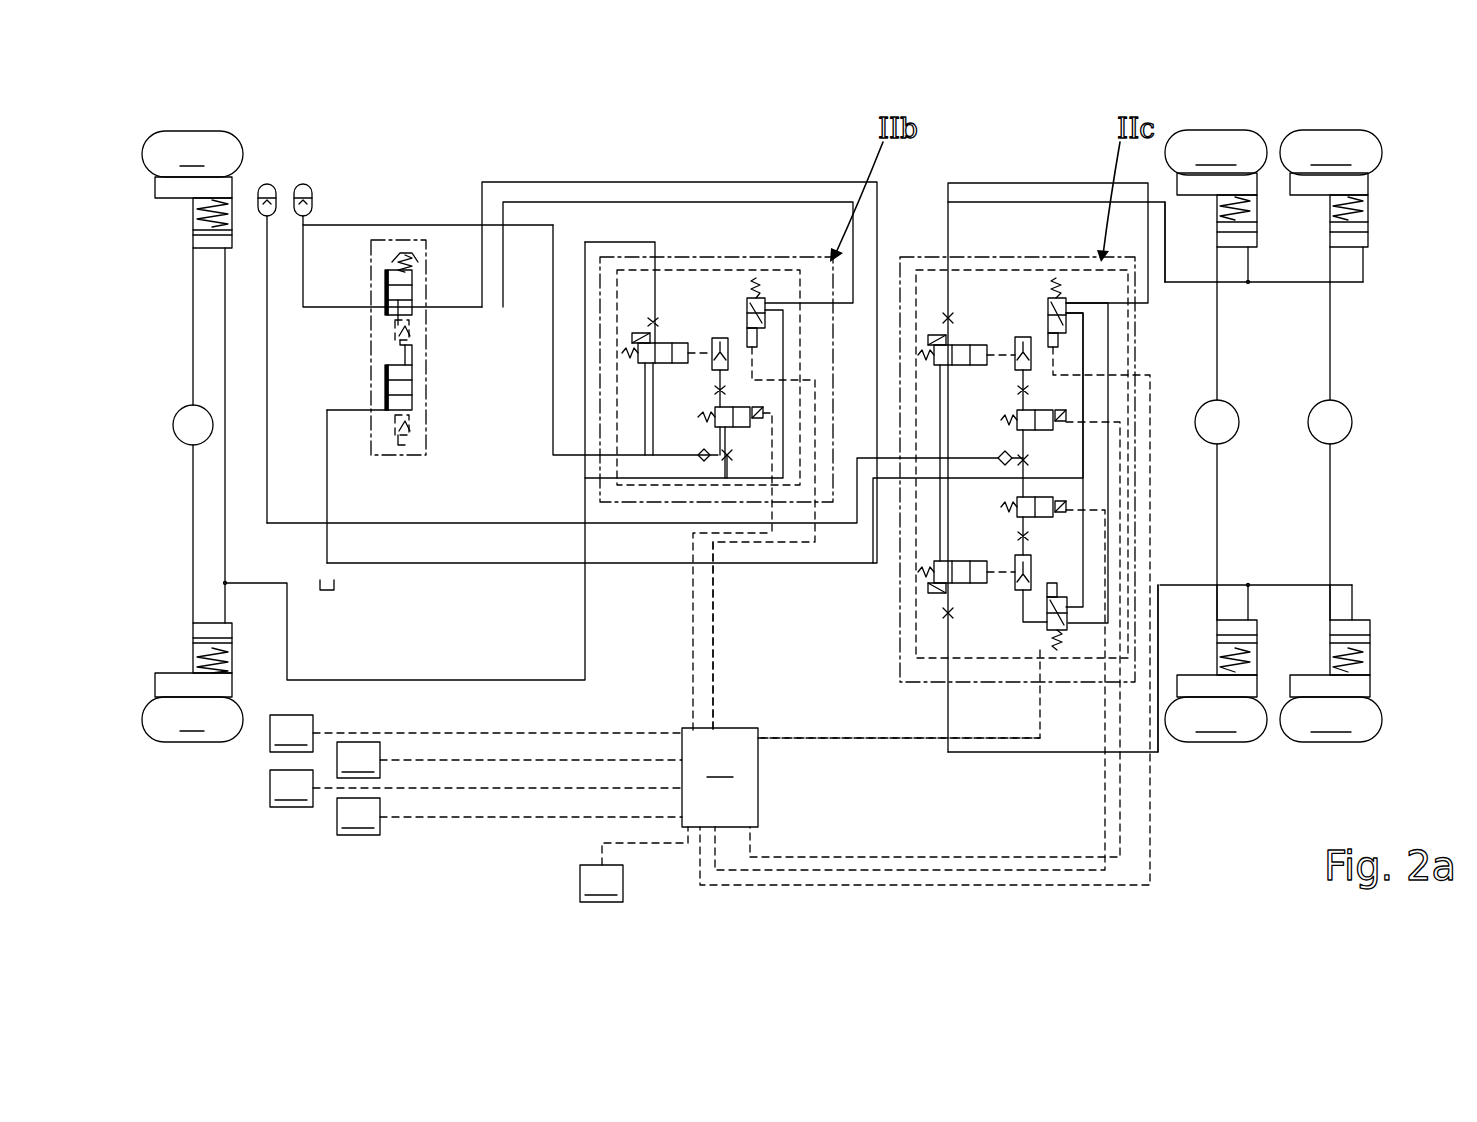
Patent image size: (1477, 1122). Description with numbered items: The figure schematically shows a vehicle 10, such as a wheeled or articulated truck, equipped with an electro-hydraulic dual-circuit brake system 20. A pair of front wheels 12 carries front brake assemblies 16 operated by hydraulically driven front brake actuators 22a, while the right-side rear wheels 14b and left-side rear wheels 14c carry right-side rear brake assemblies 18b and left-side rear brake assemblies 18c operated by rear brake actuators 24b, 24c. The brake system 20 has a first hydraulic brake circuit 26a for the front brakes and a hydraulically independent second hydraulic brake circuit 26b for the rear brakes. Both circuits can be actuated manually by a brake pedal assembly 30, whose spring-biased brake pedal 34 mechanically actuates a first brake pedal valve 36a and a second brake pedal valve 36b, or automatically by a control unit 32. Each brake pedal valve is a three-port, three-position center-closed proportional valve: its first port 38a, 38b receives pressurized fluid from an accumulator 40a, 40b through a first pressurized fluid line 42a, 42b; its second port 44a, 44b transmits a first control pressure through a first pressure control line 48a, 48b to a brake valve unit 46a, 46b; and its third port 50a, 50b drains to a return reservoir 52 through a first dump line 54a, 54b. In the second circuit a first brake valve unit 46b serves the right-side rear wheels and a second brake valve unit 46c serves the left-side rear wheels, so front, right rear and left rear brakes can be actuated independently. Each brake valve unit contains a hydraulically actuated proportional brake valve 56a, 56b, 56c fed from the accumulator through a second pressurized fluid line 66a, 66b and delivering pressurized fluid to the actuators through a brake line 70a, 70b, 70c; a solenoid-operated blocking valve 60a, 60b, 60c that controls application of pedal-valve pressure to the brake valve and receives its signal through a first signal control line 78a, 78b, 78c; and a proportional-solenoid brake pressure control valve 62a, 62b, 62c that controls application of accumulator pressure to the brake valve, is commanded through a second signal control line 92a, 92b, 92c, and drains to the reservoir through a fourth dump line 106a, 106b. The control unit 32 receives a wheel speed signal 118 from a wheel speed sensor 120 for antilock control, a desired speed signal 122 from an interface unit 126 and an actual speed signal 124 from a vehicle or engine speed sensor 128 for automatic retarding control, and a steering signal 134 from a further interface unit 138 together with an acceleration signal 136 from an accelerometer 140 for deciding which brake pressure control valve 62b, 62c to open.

The vehicle 10 is at (262, 118).
The front wheel 12 is at (192, 436).
The right side rear wheel 14b is at (1273, 152).
The left side rear wheel 14c is at (1273, 719).
The front brake assembly 16 is at (170, 183).
The right side rear brake assembly 18b is at (1250, 183).
The left side rear brake assembly 18c is at (1250, 682).
The brake system 20 is at (412, 140).
The front brake actuator 22a is at (200, 238).
The rear brake actuator 24b is at (1250, 241).
The rear brake actuator 24c is at (1335, 630).
The first hydraulic brake circuit 26a is at (729, 157).
The second hydraulic brake circuit 26b is at (828, 760).
The brake pedal assembly 30 is at (385, 240).
The control unit 32 is at (720, 777).
The brake pedal 34 is at (410, 252).
The first brake pedal valve 36a is at (388, 286).
The second brake pedal valve 36b is at (388, 397).
The first port 38a is at (384, 312).
The first port 38b is at (384, 410).
The accumulator 40a is at (304, 182).
The accumulator 40b is at (268, 182).
The first pressurized fluid line 42a is at (302, 290).
The first pressurized fluid line 42b is at (265, 325).
The second port 44a is at (405, 320).
The second port 44b is at (406, 415).
The brake valve unit 46a is at (750, 260).
The first brake valve unit 46b is at (1001, 265).
The second brake valve unit 46c is at (1088, 650).
The first pressure control line 48a is at (585, 182).
The first pressure control line 48b is at (652, 202).
The third port 50a is at (384, 316).
The third port 50b is at (400, 437).
The return reservoir 52 is at (338, 585).
The first dump line 54a is at (380, 352).
The first dump line 54b is at (392, 418).
The brake valve 56a is at (630, 344).
The brake valve 56b is at (925, 347).
The brake valve 56c is at (925, 577).
The blocking valve 60a is at (765, 272).
The blocking valve 60b is at (1061, 275).
The blocking valve 60c is at (1068, 650).
The brake pressure control valve 62a is at (698, 417).
The brake pressure control valve 62b is at (1000, 412).
The brake pressure control valve 62c is at (998, 505).
The second pressurized fluid line 66a is at (540, 228).
The second pressurized fluid line 66b is at (456, 522).
The brake line 70a is at (415, 680).
The brake line 70b is at (977, 190).
The brake line 70c is at (965, 753).
The first signal control line 78a is at (715, 660).
The first signal control line 78b is at (733, 887).
The first signal control line 78c is at (883, 740).
The second signal control line 92a is at (692, 645).
The second signal control line 92b is at (822, 872).
The second signal control line 92c is at (935, 860).
The fourth dump line 106a is at (667, 480).
The fourth dump line 106b is at (820, 564).
The wheel speed signal 118 is at (442, 733).
The wheel speed sensor 120 is at (291, 733).
The desired speed signal 122 is at (541, 762).
The actual speed signal 124 is at (476, 790).
The interface unit 126 is at (358, 760).
The vehicle or engine speed sensor 128 is at (291, 788).
The steering signal 134 is at (418, 818).
The acceleration signal 136 is at (668, 845).
The further interface unit 138 is at (358, 816).
The accelerometer 140 is at (601, 883).